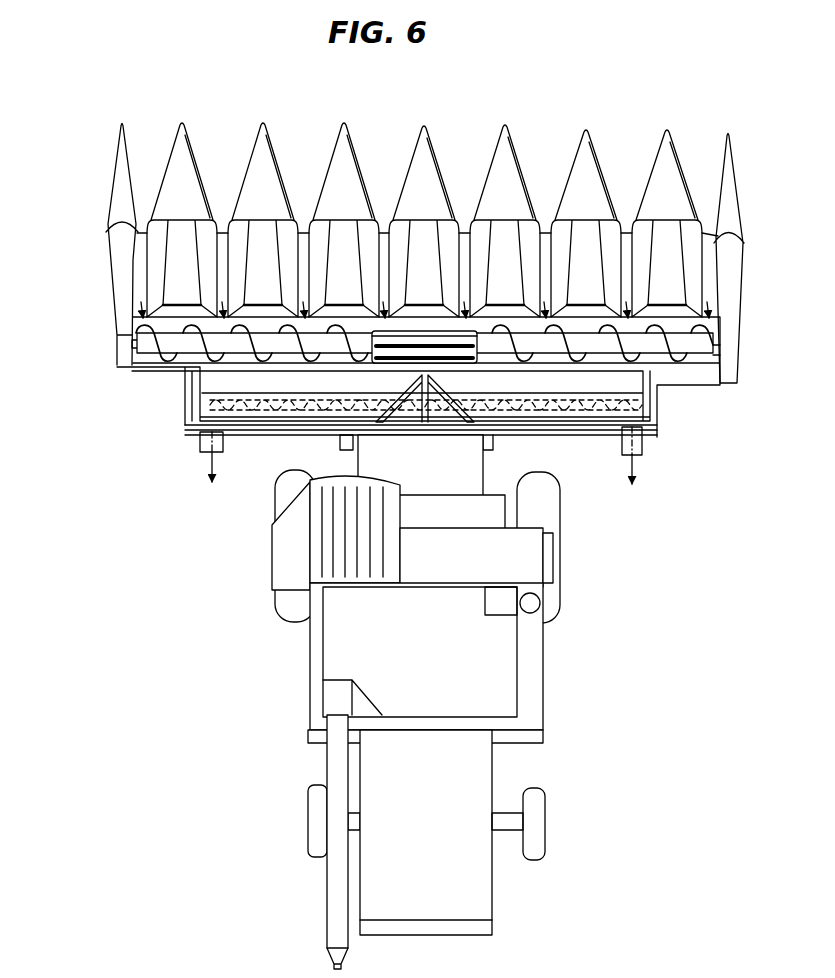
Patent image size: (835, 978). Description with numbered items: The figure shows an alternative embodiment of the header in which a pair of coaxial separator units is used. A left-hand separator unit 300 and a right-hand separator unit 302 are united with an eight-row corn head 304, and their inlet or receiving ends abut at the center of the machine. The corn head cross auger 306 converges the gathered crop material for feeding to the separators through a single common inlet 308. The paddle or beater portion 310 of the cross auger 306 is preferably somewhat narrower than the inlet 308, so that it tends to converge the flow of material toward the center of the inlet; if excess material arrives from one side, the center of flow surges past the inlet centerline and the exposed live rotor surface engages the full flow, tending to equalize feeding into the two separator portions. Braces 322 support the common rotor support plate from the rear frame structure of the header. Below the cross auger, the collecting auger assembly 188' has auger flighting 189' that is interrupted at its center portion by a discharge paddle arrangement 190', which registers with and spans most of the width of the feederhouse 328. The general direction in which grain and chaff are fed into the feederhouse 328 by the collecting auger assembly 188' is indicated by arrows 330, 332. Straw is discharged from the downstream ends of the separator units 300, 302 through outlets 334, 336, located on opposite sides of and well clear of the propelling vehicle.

The eight-row corn head 304 is at (101, 267).
The corn head cross auger 306 is at (143, 355).
The inlet 308 is at (487, 362).
The paddle or beater portion 310 is at (402, 330).
The braces 322 is at (415, 372).
The collecting auger assembly 188' is at (463, 434).
The auger flighting 189' is at (420, 403).
The discharge paddle arrangement 190' is at (431, 481).
The outlet 334 is at (198, 442).
The outlet 336 is at (643, 452).
The left-hand separator unit 300 is at (265, 437).
The feederhouse 328 is at (341, 446).
The arrow 330 is at (392, 439).
The arrow 332 is at (450, 440).
The right-hand separator unit 302 is at (593, 440).